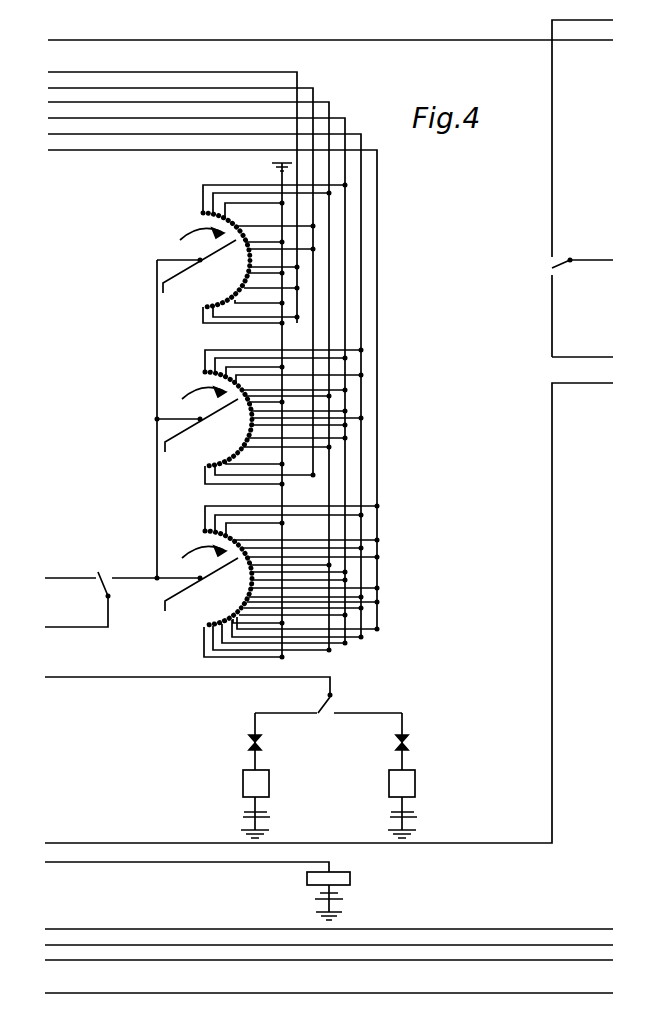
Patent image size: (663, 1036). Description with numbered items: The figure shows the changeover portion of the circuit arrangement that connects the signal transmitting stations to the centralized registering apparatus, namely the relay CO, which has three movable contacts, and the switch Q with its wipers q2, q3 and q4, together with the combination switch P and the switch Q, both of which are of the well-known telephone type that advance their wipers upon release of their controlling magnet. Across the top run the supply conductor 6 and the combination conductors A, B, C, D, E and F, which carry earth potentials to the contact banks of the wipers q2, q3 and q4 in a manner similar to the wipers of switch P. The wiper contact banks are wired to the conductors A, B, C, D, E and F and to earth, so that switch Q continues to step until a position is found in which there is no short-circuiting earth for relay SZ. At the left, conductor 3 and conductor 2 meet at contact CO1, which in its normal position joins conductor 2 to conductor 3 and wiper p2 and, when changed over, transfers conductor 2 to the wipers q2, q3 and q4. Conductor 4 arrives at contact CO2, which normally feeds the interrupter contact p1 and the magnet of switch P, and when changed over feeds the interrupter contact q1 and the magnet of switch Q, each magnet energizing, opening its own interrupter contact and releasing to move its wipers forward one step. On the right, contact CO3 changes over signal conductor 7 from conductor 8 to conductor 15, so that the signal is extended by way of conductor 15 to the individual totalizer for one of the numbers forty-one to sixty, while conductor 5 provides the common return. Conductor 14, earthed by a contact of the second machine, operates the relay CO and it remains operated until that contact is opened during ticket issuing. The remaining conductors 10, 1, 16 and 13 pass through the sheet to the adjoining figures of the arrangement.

The bottom bus line 1 is at (329, 936).
The conductor 2 is at (76, 611).
The conductor 3 is at (70, 568).
The conductor 4 is at (187, 676).
The common return line 5 is at (329, 603).
The top supply line 6 is at (330, 30).
The signal conductor 7 is at (592, 250).
The conductor 8 is at (582, 347).
The bottom bus line 10 is at (329, 919).
The bottom bus line 13 is at (329, 983).
The conductor 14 is at (187, 857).
The conductor 15 is at (582, 129).
The bottom bus line 16 is at (329, 951).
The input line A is at (172, 189).
The conductor B is at (180, 274).
The conductor C is at (188, 368).
The input line D is at (196, 373).
The input line E is at (204, 378).
The input line F is at (212, 382).
The contact CO1 is at (117, 572).
The contact CO2 is at (328, 701).
The contact CO3 is at (536, 306).
The relay CO is at (373, 881).
The wiper q2 is at (251, 254).
The wiper q3 is at (259, 417).
The wiper q4 is at (267, 581).
The interrupter contact p1 is at (238, 741).
The interrupter contact q1 is at (417, 741).
The combination switch P is at (228, 782).
The switch Q is at (442, 782).